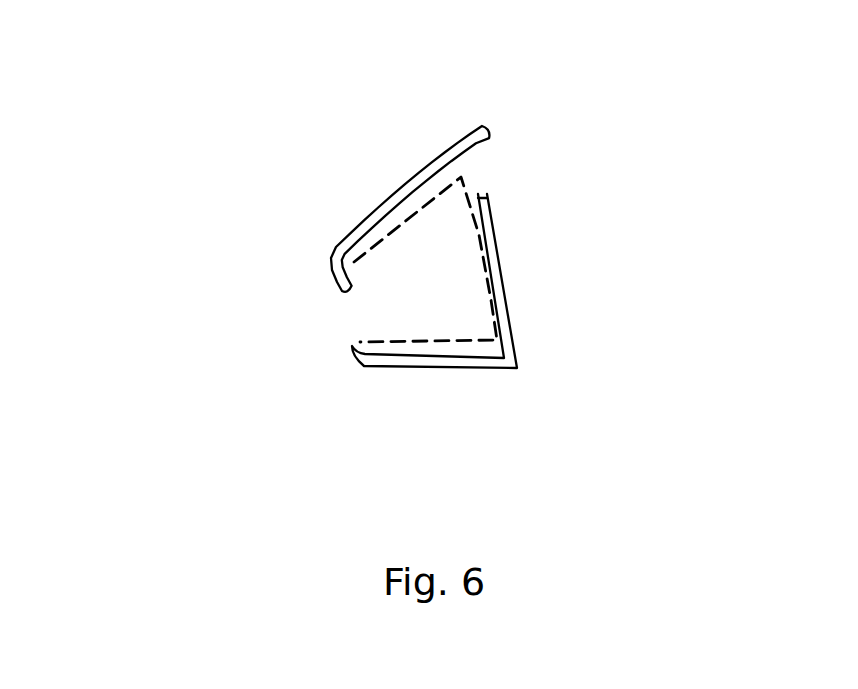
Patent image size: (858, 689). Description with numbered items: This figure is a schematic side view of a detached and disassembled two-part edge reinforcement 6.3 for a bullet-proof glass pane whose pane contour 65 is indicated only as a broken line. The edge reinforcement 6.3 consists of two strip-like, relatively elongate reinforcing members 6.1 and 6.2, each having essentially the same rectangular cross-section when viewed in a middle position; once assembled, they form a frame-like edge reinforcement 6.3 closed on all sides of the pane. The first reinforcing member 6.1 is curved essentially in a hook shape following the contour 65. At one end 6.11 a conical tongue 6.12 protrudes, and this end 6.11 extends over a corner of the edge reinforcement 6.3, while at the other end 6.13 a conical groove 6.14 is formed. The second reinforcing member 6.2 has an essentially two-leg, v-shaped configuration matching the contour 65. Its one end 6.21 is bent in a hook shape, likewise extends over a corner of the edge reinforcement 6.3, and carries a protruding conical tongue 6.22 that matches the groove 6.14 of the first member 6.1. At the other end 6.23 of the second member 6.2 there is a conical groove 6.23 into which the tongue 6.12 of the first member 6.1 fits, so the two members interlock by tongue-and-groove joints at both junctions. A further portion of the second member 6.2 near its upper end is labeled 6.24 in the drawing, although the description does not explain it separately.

The reinforcing member 6.1 is at (437, 153).
The second reinforcing member 6.2 is at (498, 368).
The edge reinforcement 6.3 is at (383, 178).
The end of reinforcing member 6.11 is at (494, 129).
The tongue 6.12 is at (491, 144).
The other end of reinforcing member 6.13 is at (347, 299).
The conical groove 6.14 is at (351, 320).
The end of second reinforcing member 6.21 is at (353, 347).
The conical tongue 6.22 is at (340, 348).
The conical groove 6.23 is at (493, 219).
The top end of holding leg 6.24 is at (494, 192).
The pane contour 65 is at (343, 333).